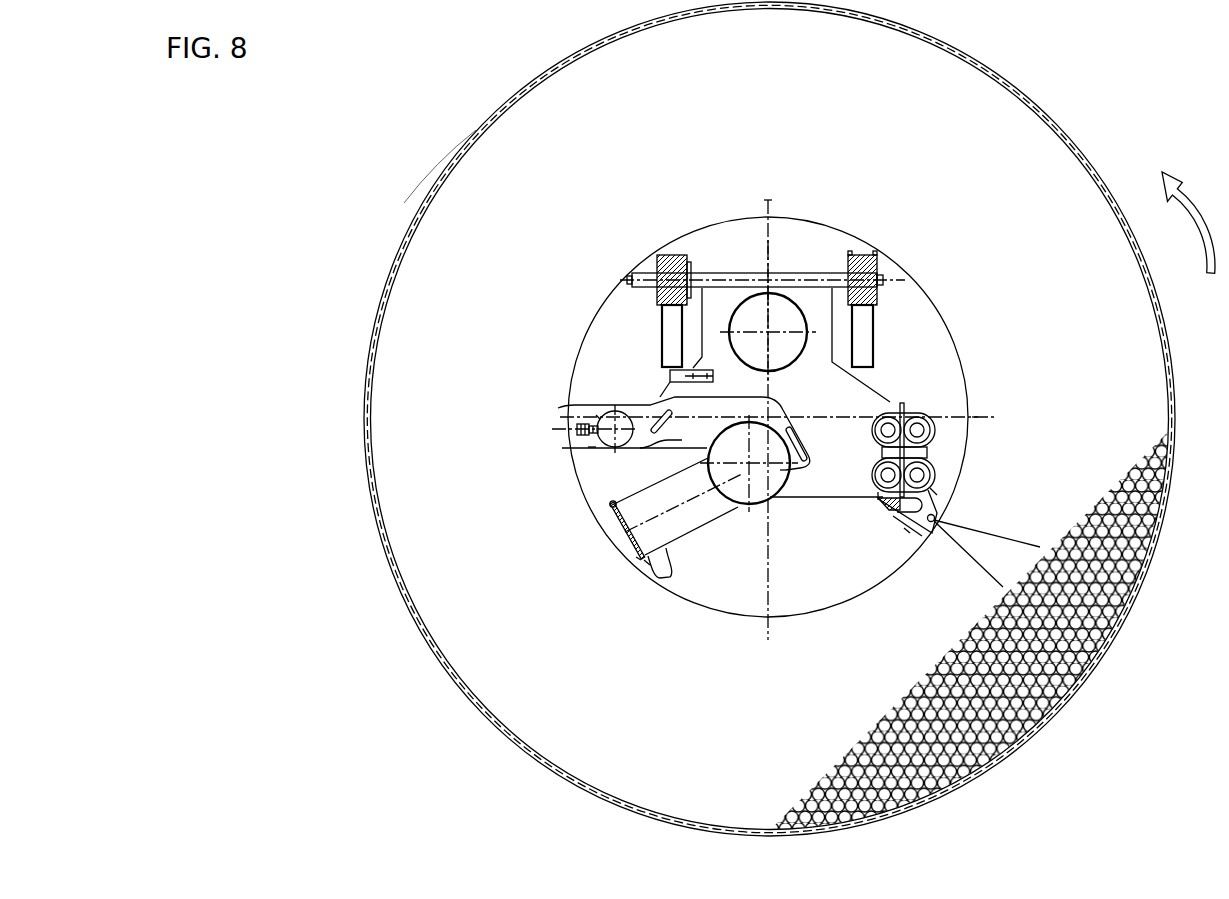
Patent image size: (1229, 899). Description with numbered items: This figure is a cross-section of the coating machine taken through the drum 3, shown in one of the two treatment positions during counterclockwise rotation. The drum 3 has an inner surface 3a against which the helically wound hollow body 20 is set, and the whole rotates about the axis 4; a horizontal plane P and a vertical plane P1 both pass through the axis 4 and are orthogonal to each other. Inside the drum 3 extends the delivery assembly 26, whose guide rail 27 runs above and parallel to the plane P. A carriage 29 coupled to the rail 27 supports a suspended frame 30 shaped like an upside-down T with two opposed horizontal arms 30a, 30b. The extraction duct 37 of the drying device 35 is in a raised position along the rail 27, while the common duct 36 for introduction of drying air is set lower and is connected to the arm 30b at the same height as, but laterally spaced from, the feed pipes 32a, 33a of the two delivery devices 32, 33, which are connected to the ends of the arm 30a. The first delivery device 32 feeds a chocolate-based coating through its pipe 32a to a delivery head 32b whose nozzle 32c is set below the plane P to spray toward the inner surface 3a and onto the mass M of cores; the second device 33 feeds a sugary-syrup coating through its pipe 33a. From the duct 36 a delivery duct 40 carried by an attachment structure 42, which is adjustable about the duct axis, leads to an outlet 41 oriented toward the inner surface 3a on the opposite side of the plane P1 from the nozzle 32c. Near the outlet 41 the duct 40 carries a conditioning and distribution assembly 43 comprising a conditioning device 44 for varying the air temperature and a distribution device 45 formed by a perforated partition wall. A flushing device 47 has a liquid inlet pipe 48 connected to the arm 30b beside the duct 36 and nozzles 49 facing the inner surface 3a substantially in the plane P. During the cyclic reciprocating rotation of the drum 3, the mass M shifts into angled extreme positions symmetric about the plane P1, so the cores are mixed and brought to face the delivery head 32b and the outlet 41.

The drum 3 is at (479, 131).
The inner surface 3a is at (440, 198).
The axis 4 is at (758, 457).
The annular or axially hollow body 20 is at (547, 541).
The delivery assembly 26 is at (698, 333).
The guide rail 27 is at (875, 321).
The carriage 29 is at (862, 253).
The suspended frame 30 is at (882, 386).
The horizontal arm 30a is at (885, 388).
The horizontal arm 30b is at (670, 381).
The delivery device 32 is at (943, 482).
The feed pipe 32a is at (938, 467).
The delivery head 32b is at (906, 531).
The delivery nozzle 32c is at (933, 522).
The delivery device 33 is at (860, 457).
The feed pipe 33a is at (876, 494).
The drying device 35 is at (703, 570).
The common duct 36 is at (752, 538).
The extraction duct 37 is at (777, 262).
The delivery duct 40 is at (668, 578).
The outlet 41 is at (637, 573).
The attachment structure 42 is at (620, 445).
The conditioning and distribution assembly 43 is at (630, 564).
The conditioning device 44 is at (620, 520).
The distribution device 45 is at (630, 518).
The flushing device 47 is at (592, 447).
The pipe 48 is at (602, 418).
The nozzles 49 is at (576, 431).
The mass of cores M is at (1148, 568).
The horizontal plane P is at (975, 414).
The vertical plane P1 is at (757, 206).